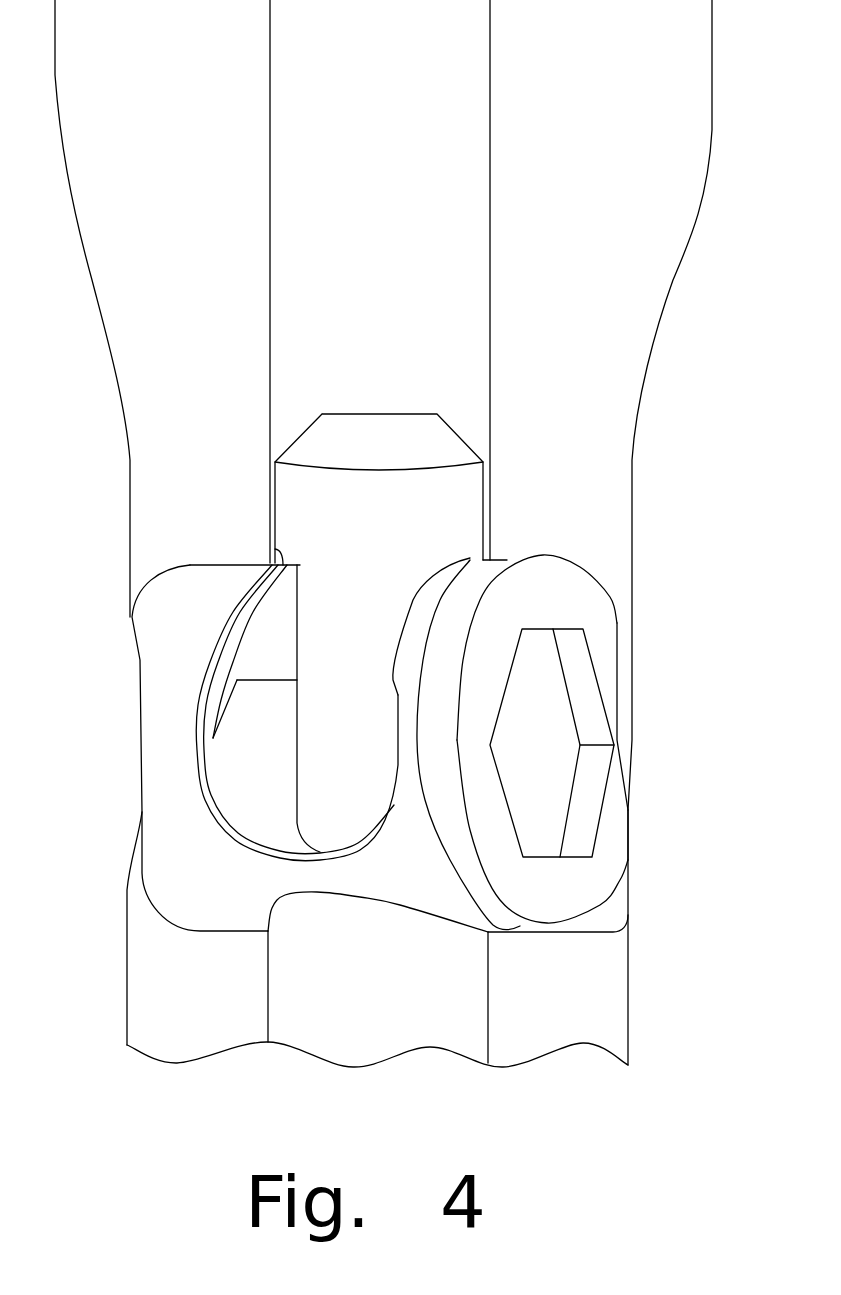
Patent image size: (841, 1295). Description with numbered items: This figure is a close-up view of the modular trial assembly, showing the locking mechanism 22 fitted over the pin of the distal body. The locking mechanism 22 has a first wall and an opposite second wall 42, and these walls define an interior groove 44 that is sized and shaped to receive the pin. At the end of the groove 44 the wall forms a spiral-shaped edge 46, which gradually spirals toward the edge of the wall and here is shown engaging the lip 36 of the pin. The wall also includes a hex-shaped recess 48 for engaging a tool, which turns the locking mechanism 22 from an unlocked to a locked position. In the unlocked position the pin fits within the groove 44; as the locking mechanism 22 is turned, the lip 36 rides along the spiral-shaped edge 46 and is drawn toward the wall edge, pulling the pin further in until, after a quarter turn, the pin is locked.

The locking mechanism 22 is at (587, 602).
The lip 36 is at (272, 557).
The second wall 42 is at (450, 843).
The groove 44 is at (155, 763).
The spiral-shaped edge 46 is at (245, 597).
The hex-shaped recess 48 is at (588, 647).